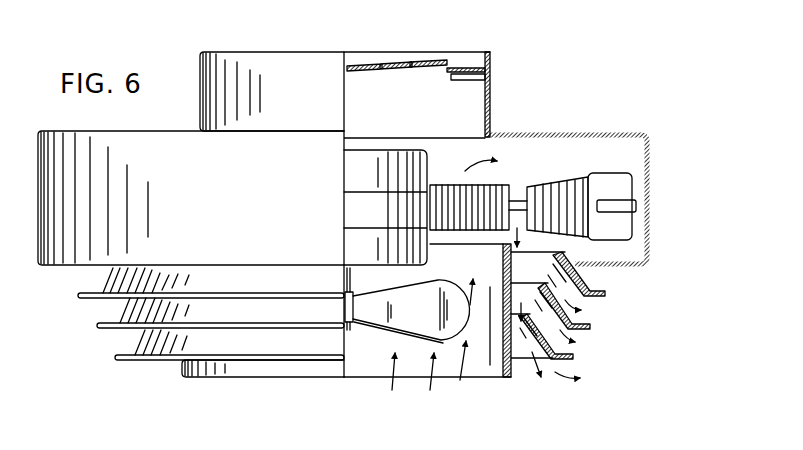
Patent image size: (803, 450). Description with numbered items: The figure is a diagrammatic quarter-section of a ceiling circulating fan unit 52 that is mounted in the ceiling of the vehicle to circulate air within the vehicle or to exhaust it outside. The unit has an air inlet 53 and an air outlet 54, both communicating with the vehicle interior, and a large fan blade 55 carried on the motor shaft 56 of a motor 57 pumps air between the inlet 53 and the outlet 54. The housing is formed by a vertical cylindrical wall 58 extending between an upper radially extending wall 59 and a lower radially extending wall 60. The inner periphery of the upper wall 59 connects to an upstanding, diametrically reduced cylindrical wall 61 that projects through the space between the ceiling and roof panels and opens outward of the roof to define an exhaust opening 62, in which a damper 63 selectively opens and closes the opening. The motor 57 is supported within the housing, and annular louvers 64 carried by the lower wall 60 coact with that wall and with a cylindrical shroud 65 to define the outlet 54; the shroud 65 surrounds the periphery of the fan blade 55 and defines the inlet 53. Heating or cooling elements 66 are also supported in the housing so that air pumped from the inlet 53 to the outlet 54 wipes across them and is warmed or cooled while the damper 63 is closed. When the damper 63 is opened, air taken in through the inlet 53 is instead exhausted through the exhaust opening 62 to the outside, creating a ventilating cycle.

The ceiling circulating fan unit 52 is at (519, 130).
The air inlet 53 is at (488, 366).
The air outlet 54 is at (529, 249).
The fan blade 55 is at (385, 310).
The motor shaft 56 is at (352, 276).
The motor 57 is at (421, 257).
The vertical cylindrical wall 58 is at (650, 162).
The upper radially extending wall 59 is at (605, 130).
The lower radially extending wall 60 is at (620, 265).
The upstanding diametrically reduced cylindrical wall 61 is at (492, 98).
The exhaust opening 62 is at (388, 60).
The damper 63 is at (411, 62).
The annular louvers 64 is at (582, 348).
The cylindrical shroud 65 is at (511, 372).
The heating or cooling elements 66 is at (625, 191).